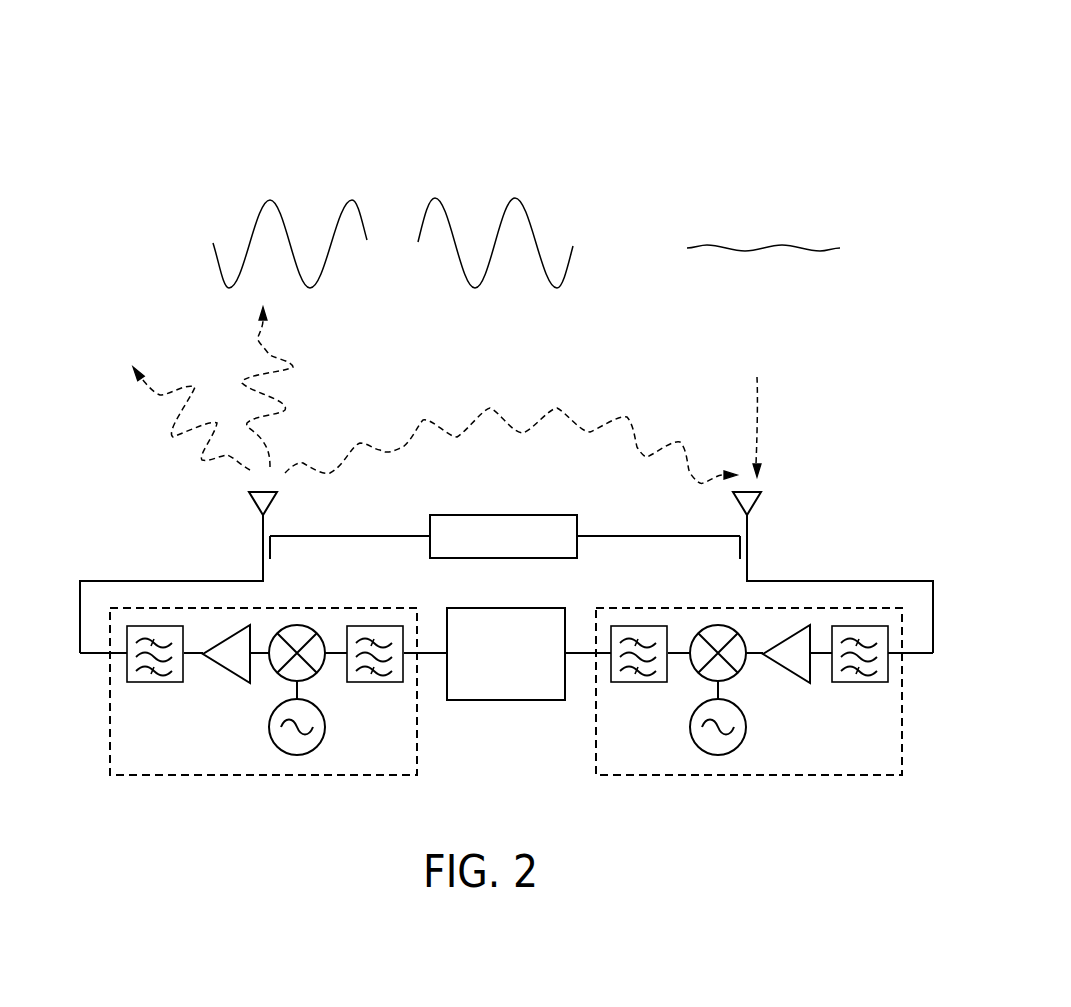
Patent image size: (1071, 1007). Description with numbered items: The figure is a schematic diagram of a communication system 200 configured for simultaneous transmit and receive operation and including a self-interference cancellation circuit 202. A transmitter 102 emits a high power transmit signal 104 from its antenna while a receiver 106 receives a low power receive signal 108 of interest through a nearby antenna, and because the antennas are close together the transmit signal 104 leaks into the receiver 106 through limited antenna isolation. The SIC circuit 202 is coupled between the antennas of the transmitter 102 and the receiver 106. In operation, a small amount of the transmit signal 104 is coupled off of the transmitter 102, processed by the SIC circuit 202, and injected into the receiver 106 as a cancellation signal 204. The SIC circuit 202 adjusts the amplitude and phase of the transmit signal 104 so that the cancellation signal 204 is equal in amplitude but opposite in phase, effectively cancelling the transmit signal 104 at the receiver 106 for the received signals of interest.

The full-duplex communication system 200 is at (646, 56).
The transmit signal 104 is at (288, 178).
The cancellation signal 204 is at (502, 124).
The receive signal 108 is at (776, 176).
The self-interference cancellation (SIC) circuit 202 is at (547, 515).
The transmitter 102 is at (187, 775).
The receiver 106 is at (675, 775).